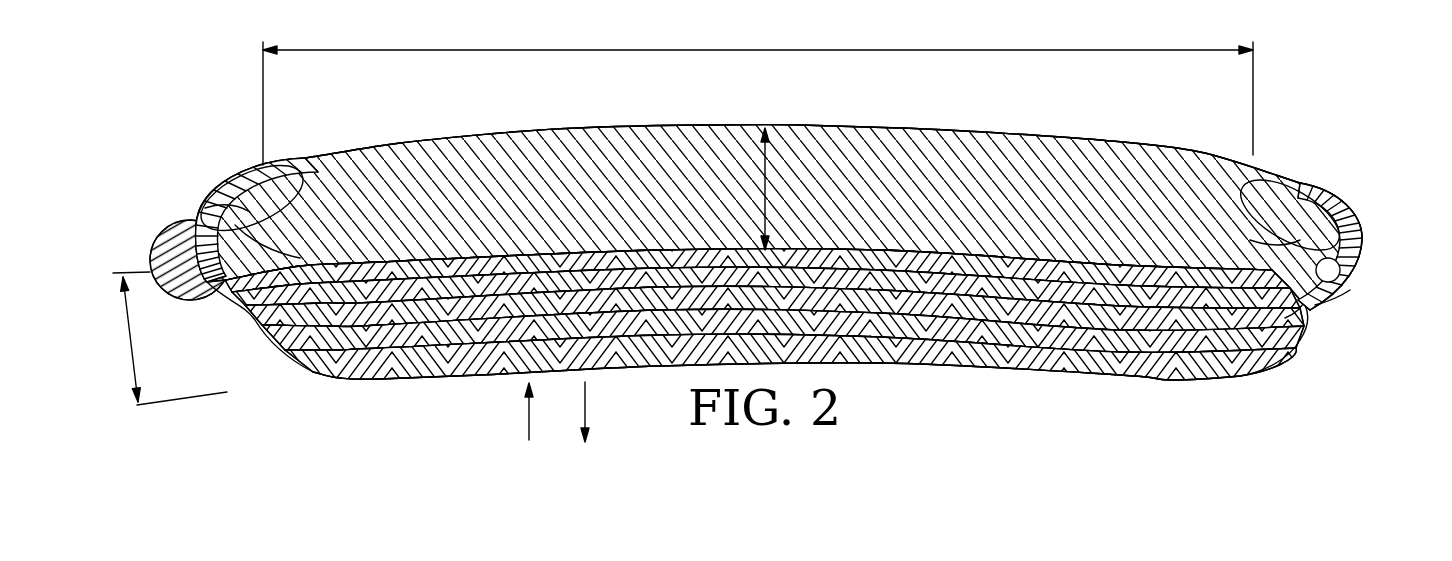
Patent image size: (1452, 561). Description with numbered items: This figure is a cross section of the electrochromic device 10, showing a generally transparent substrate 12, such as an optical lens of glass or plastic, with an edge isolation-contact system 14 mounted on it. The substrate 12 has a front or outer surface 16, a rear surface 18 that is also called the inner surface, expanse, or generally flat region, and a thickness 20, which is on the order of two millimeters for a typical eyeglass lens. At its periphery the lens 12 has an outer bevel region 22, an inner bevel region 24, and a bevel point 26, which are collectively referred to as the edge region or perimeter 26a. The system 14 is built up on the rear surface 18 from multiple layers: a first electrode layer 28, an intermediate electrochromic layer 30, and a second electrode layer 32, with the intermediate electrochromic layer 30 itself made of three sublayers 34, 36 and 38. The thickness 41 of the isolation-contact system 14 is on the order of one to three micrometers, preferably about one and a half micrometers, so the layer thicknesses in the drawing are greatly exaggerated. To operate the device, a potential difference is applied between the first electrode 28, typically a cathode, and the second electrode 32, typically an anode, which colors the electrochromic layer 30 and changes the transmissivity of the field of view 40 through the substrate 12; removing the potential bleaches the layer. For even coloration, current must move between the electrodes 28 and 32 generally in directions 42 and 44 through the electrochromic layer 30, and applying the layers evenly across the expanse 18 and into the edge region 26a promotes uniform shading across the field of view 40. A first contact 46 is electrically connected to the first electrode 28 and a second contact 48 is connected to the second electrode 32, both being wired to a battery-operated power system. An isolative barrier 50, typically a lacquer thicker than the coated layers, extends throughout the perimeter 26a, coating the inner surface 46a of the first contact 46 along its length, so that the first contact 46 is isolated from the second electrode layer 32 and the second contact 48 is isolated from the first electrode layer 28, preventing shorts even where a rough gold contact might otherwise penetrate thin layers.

The electrochromic device 10 is at (762, 261).
The substrate 12 is at (940, 158).
The edge isolation-contact system 14 is at (779, 356).
The front surface 16 is at (860, 126).
The rear surface 18 is at (1020, 256).
The thickness 20 is at (772, 140).
The outer bevel region 22 is at (243, 184).
The inner bevel region 24 is at (262, 230).
The bevel point 26 is at (813, 205).
The edge region 26a is at (1345, 153).
The first electrode layer 28 is at (1285, 318).
The intermediate electrochromic layer 30 is at (1142, 342).
The second electrode layer 32 is at (1222, 372).
The sublayer 34 is at (912, 277).
The sublayer 36 is at (961, 300).
The sublayer 38 is at (1040, 335).
The field of view 40 is at (568, 48).
The thickness 41 is at (130, 378).
The direction 42 is at (529, 429).
The direction 44 is at (585, 429).
The first contact 46 is at (1365, 232).
The inner surface 46a is at (1340, 264).
The second contact 48 is at (163, 242).
The isolative barrier 50 is at (200, 206).